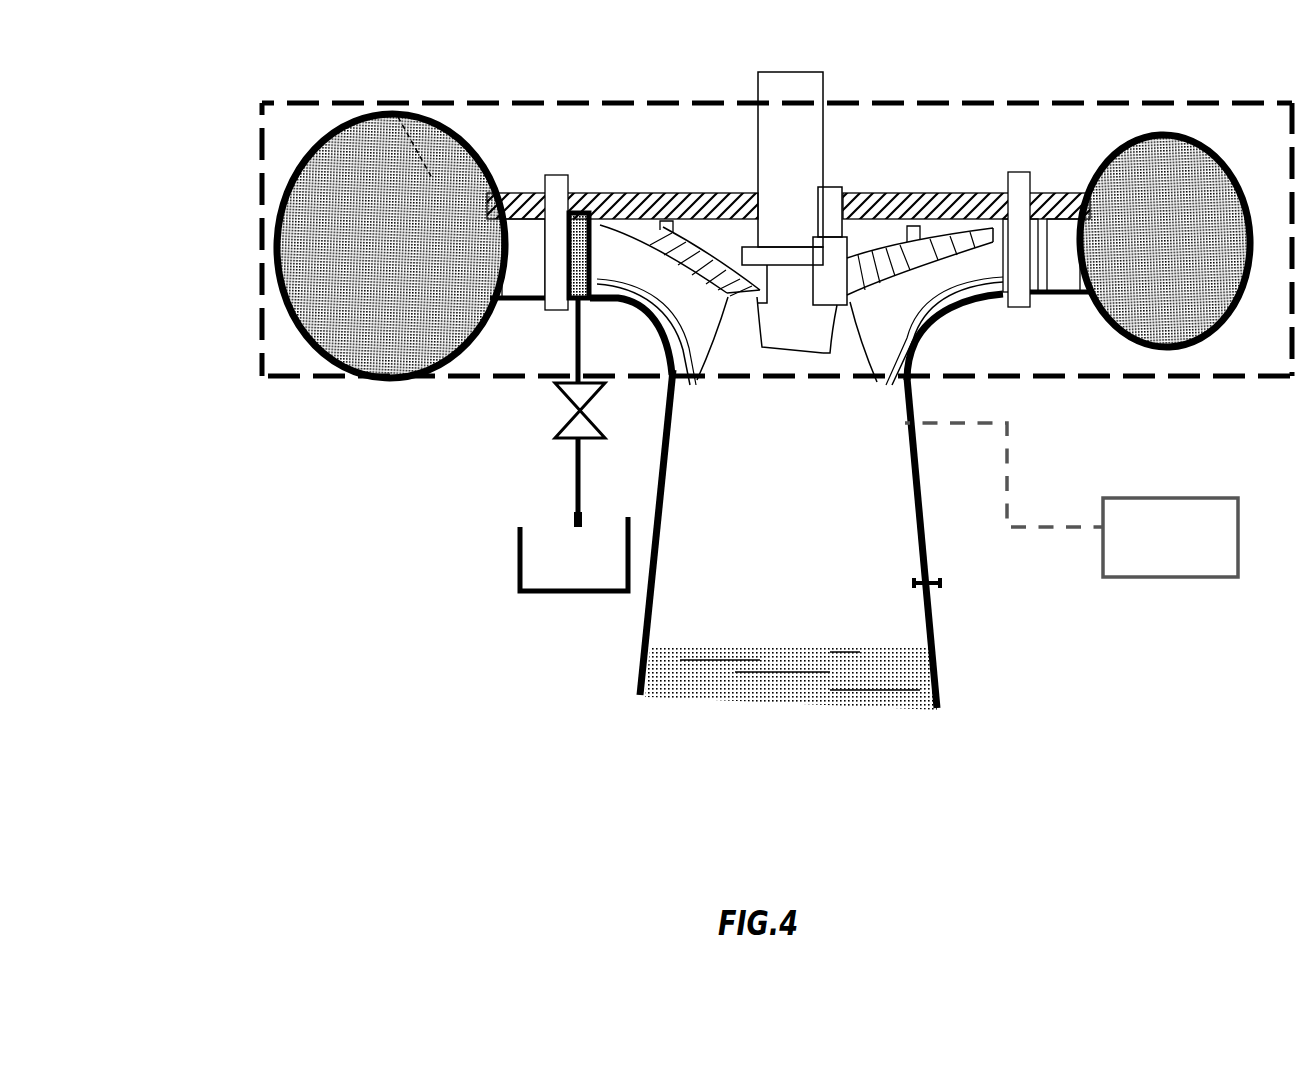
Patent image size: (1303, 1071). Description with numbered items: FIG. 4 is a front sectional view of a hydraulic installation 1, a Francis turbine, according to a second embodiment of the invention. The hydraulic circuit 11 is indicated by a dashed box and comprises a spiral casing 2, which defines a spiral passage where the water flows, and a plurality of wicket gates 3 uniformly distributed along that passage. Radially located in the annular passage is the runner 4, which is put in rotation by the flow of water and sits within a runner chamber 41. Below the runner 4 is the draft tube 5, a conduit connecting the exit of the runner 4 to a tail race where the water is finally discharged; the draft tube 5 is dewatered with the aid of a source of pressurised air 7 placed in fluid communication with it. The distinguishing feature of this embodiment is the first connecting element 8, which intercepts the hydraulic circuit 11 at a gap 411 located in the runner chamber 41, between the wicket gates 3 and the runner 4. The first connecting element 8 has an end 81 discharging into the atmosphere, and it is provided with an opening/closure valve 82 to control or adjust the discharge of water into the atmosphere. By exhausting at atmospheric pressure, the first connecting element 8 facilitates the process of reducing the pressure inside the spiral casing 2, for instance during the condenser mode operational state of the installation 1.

The hydraulic installation 1 is at (262, 112).
The spiral casing 2 is at (418, 223).
The wicket gates 3 is at (1017, 255).
The runner 4 is at (794, 373).
The runner chamber 41 is at (719, 253).
The gap 411 is at (583, 215).
The draft tube 5 is at (802, 508).
The source of pressurised air 7 is at (1176, 545).
The first connecting element 8 is at (578, 340).
The end 81 is at (570, 520).
The opening/closure valve 82 is at (575, 428).
The hydraulic circuit 11 is at (926, 152).